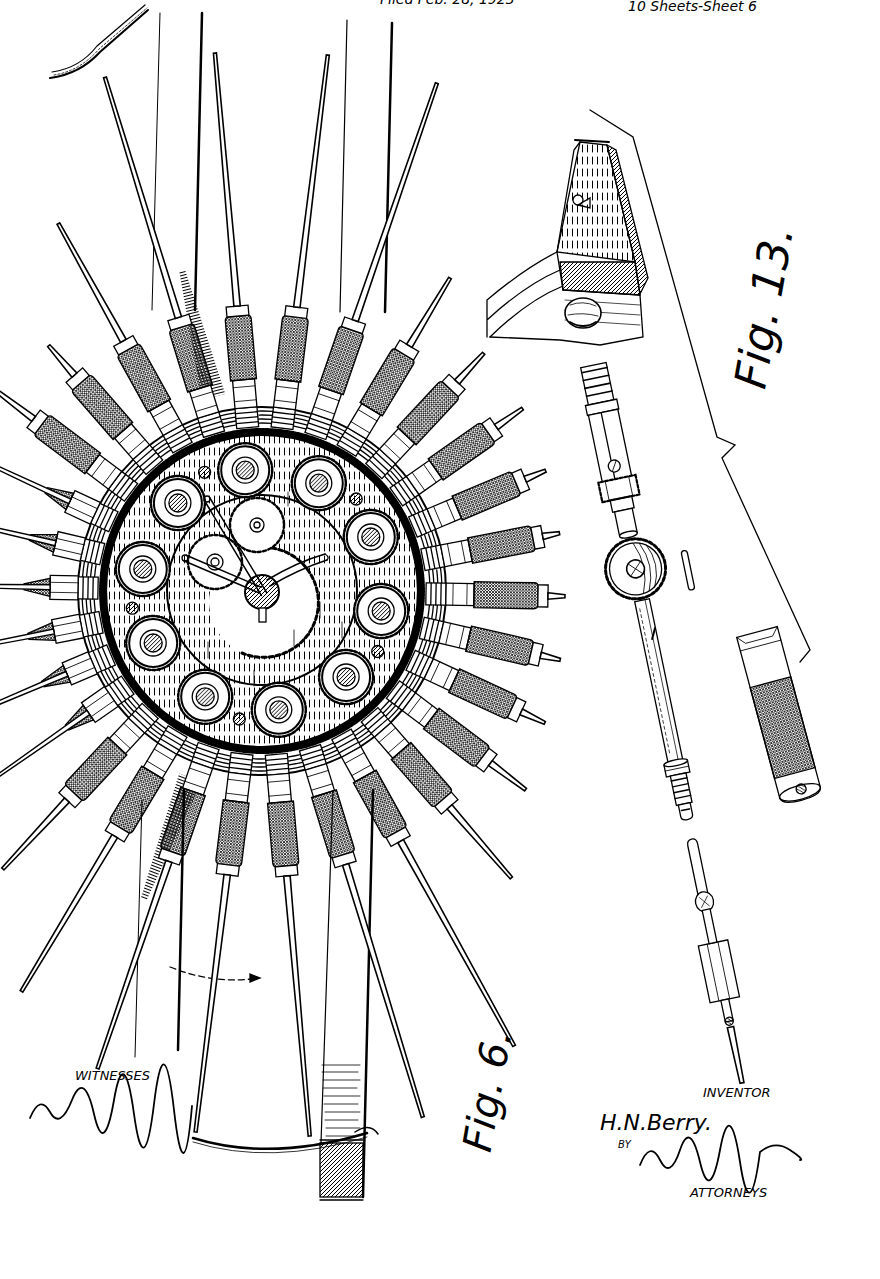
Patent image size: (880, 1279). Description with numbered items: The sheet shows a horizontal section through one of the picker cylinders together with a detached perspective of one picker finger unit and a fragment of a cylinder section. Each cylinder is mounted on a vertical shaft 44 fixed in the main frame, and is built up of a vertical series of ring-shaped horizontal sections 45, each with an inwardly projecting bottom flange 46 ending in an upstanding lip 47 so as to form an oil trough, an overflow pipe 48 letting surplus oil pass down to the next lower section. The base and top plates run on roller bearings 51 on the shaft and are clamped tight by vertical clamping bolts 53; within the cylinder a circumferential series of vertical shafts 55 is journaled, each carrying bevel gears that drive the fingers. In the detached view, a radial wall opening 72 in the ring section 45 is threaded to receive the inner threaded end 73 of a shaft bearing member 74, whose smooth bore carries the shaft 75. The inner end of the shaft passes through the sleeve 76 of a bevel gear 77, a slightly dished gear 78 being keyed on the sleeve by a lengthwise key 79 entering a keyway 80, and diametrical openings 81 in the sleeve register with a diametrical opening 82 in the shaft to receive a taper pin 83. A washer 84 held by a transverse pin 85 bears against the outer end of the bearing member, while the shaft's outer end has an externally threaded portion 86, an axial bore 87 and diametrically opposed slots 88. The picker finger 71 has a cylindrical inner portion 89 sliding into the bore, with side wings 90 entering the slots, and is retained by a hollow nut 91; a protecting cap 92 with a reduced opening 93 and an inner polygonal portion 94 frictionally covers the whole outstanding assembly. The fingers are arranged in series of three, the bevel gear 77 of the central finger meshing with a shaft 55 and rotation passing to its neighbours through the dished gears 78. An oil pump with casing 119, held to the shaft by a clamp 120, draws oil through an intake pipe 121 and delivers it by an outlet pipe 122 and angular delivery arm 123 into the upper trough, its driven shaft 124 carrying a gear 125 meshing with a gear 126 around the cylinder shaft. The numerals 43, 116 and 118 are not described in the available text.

In FIG. 6, the guide strip 43 is at (99, 41).
In FIG. 6, the vertical shaft 44 is at (235, 557).
In FIG. 13, the ring-shaped horizontal section 45 is at (565, 274).
In FIG. 13, the inwardly projecting bottom flange 46 is at (602, 218).
In FIG. 13, the upstanding lip 47 is at (581, 119).
In FIG. 13, the overflow pipe 48 is at (557, 173).
In FIG. 6, the roller bearing 51 is at (297, 612).
In FIG. 6, the vertical clamping bolt 53 is at (264, 602).
In FIG. 6, the vertical shaft 55 is at (205, 578).
In FIG. 6, the picker finger 71 is at (363, 586).
In FIG. 13, the picker finger 71 is at (727, 996).
In FIG. 13, the radial wall opening 72 is at (606, 323).
In FIG. 13, the inner threaded end 73 is at (579, 388).
In FIG. 13, the shaft bearing member 74 is at (621, 446).
In FIG. 13, the shaft 75 is at (665, 682).
In FIG. 13, the sleeve 76 is at (594, 500).
In FIG. 13, the bevel gear 77 is at (599, 481).
In FIG. 13, the dished gear 78 is at (639, 564).
In FIG. 13, the lengthwise key 79 is at (638, 499).
In FIG. 13, the keyway 80 is at (608, 572).
In FIG. 13, the diametrical opening 81 is at (605, 528).
In FIG. 13, the diametrical opening 82 is at (670, 638).
In FIG. 13, the taper pin 83 is at (699, 570).
In FIG. 13, the washer 84 is at (689, 750).
In FIG. 13, the transverse pin 85 is at (651, 756).
In FIG. 13, the externally threaded portion 86 is at (695, 788).
In FIG. 13, the axial bore 87 is at (707, 825).
In FIG. 13, the diametrically opposed slot 88 is at (685, 805).
In FIG. 13, the cylindrical inner portion 89 is at (678, 865).
In FIG. 13, the side wing 90 is at (697, 896).
In FIG. 13, the hollow nut 91 is at (704, 984).
In FIG. 6, the protecting cap 92 is at (476, 540).
In FIG. 13, the protecting cap 92 is at (768, 728).
In FIG. 13, the reduced opening 93 is at (802, 813).
In FIG. 6, the inner polygonal portion 94 is at (495, 601).
In FIG. 13, the inner polygonal portion 94 is at (772, 703).
In FIG. 6, the gear 116 is at (328, 613).
In FIG. 6, the pinion 118 is at (277, 525).
In FIG. 6, the pump casing 119 is at (259, 673).
In FIG. 6, the clamp 120 is at (297, 631).
In FIG. 6, the intake pipe 121 is at (262, 590).
In FIG. 6, the outlet pipe 122 is at (208, 573).
In FIG. 6, the angular delivery arm 123 is at (210, 639).
In FIG. 6, the driven shaft 124 is at (293, 486).
In FIG. 6, the gear 125 is at (254, 595).
In FIG. 6, the gear 126 is at (331, 639).